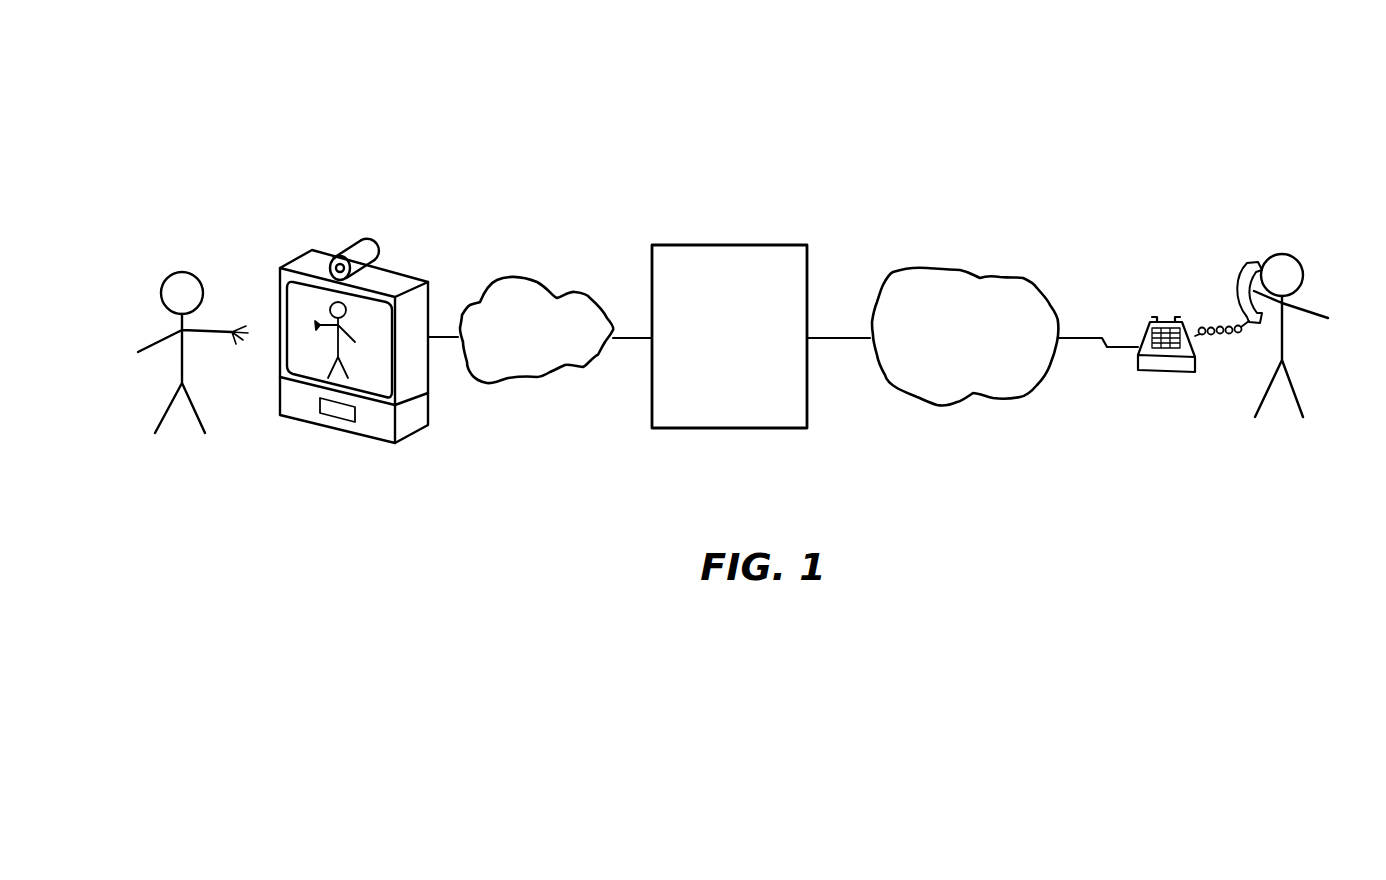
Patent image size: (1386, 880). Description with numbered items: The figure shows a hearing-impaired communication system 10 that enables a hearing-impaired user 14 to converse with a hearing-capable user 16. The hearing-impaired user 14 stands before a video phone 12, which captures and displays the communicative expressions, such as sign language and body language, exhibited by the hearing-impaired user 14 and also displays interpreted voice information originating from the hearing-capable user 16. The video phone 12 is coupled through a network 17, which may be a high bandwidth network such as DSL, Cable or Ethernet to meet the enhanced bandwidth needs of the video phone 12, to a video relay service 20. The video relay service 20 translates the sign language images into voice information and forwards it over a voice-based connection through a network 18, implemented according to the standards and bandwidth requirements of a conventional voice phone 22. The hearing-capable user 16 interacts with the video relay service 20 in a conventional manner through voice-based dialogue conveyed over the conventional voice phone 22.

The hearing-impaired communication system 10 is at (892, 131).
The video phone 12 is at (375, 229).
The hearing-impaired user 14 is at (167, 282).
The hearing-capable user 16 is at (1296, 257).
The network 17 is at (528, 277).
The network 18 is at (977, 268).
The video relay service 20 is at (747, 245).
The conventional voice phone 22 is at (1170, 309).